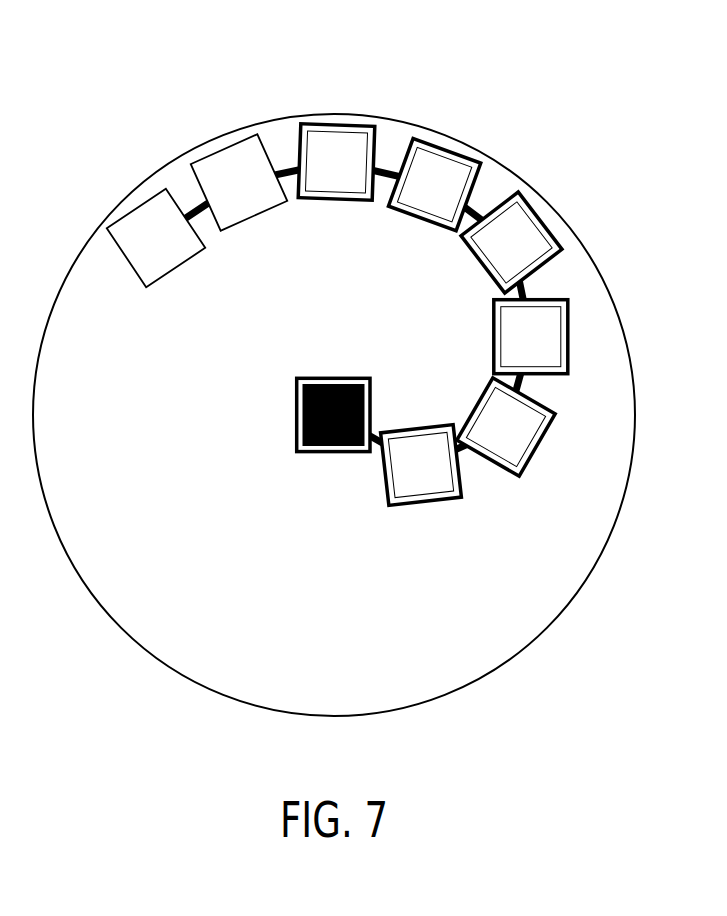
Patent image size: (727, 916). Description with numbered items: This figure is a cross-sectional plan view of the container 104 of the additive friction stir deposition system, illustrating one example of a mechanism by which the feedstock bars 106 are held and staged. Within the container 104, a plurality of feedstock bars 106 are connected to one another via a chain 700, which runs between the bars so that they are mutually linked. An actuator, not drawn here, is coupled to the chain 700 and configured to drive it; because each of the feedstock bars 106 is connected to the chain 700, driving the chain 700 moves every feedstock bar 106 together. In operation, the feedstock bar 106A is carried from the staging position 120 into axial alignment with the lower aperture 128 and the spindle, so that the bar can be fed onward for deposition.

The container 104 is at (335, 64).
The feedstock bars 106 is at (353, 338).
The feedstock bar 106A is at (415, 507).
The staging position 120 is at (426, 400).
The lower aperture 128 is at (281, 424).
The chain 700 is at (412, 218).